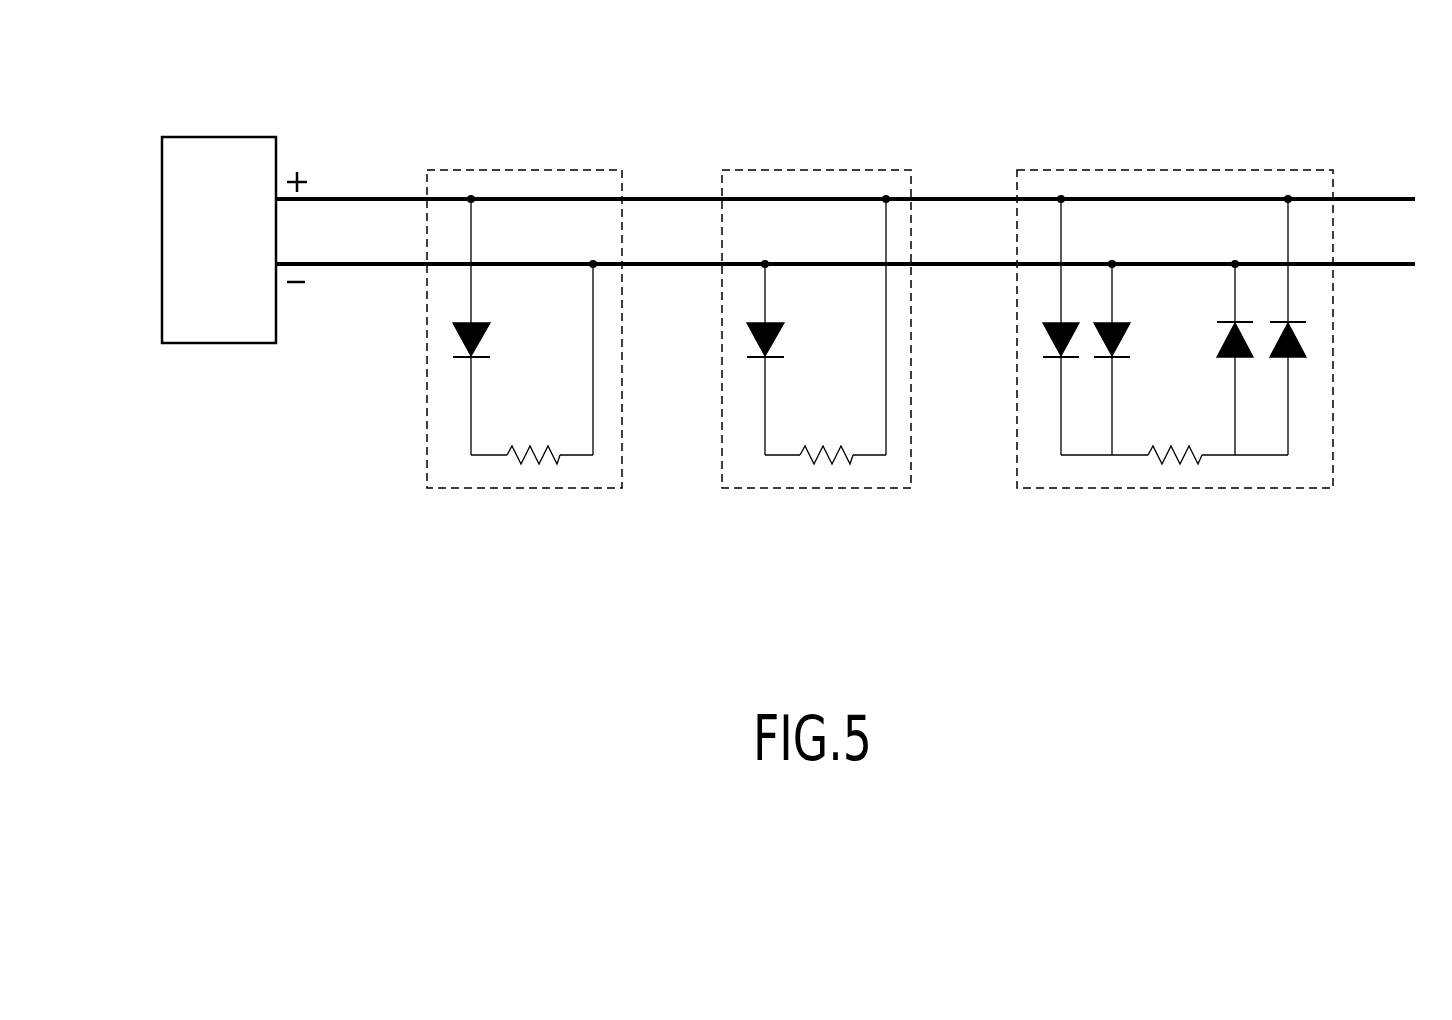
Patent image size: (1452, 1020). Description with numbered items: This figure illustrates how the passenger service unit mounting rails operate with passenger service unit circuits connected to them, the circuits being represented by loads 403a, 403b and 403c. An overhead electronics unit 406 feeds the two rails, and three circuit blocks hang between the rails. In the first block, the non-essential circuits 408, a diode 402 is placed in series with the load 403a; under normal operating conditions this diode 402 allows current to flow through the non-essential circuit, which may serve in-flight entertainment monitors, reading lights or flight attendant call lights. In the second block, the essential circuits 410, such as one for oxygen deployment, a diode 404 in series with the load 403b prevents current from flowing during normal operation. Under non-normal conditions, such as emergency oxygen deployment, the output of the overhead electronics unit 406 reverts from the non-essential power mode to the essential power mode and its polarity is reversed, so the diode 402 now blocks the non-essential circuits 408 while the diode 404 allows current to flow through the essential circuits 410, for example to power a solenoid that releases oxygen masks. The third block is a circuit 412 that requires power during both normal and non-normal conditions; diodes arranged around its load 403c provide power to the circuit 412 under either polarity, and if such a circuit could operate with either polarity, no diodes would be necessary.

The overhead electronics unit 406 is at (205, 137).
The non-essential circuits 408 is at (517, 170).
The essential circuits 410 is at (810, 170).
The circuit 412 is at (1170, 170).
The diode 402 is at (484, 323).
The diode 404 is at (778, 323).
The load 403a is at (537, 450).
The load 403b is at (831, 450).
The load 403c is at (1178, 450).